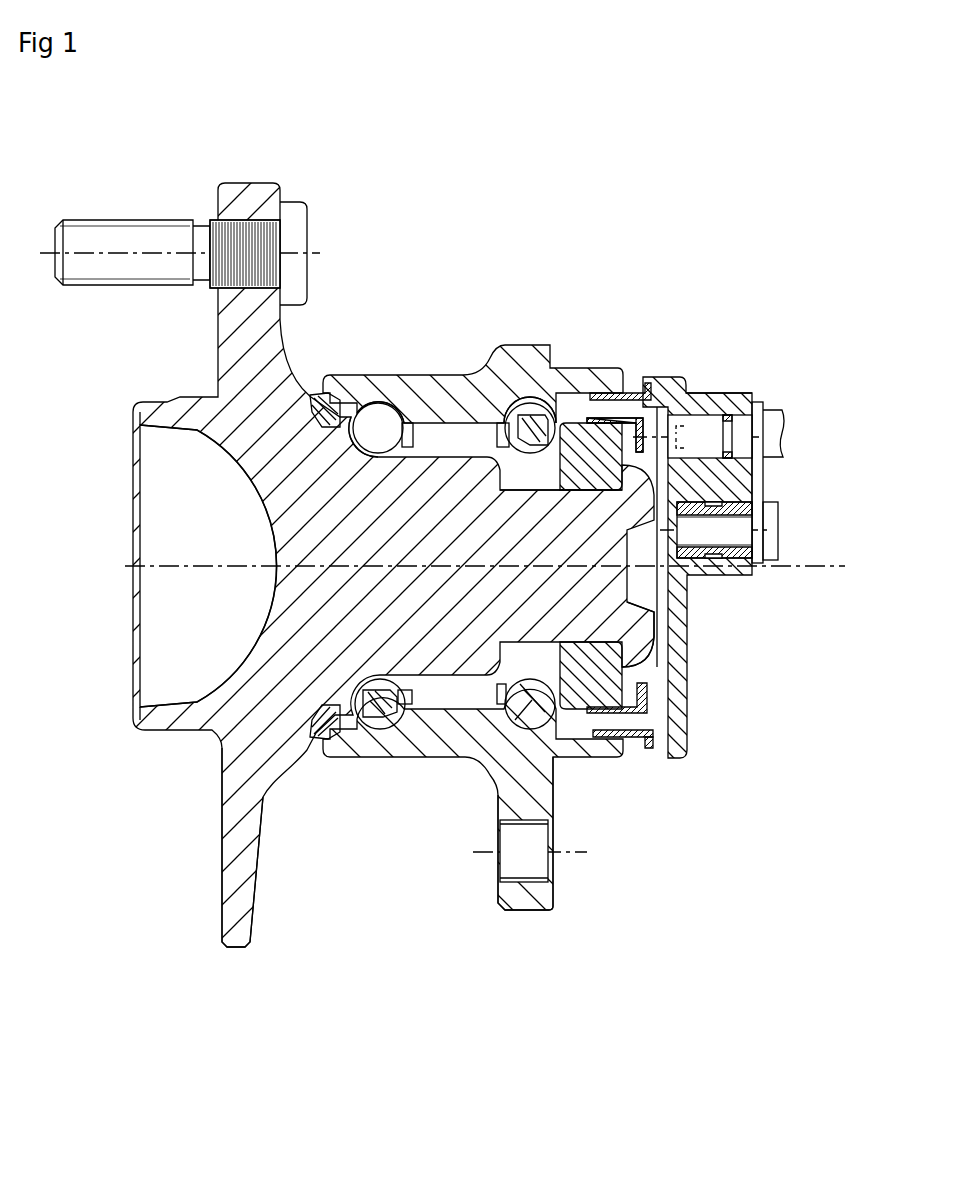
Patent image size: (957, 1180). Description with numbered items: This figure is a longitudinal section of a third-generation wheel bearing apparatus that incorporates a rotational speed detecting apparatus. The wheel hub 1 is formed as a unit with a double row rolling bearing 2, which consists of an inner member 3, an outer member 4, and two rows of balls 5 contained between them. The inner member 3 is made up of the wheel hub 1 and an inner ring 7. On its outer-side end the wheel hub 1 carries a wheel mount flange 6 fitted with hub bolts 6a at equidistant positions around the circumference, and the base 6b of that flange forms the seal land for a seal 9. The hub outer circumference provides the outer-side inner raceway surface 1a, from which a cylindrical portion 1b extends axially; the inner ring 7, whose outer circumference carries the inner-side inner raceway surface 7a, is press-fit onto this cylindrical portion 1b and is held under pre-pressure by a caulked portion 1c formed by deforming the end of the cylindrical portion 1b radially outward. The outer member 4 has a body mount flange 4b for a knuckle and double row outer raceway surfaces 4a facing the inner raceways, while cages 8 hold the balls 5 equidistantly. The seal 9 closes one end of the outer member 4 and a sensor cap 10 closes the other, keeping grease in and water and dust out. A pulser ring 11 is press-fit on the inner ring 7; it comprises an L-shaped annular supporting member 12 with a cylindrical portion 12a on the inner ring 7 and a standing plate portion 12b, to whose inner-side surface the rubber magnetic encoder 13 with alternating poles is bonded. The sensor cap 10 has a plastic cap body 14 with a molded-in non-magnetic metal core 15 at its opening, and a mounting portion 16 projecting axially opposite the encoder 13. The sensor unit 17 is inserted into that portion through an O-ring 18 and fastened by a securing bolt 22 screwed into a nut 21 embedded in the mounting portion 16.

The wheel hub 1 is at (290, 435).
The inner raceway surface 1a is at (380, 440).
The cylindrical portion 1b is at (574, 476).
The caulked portion 1c is at (648, 642).
The double row rolling bearing 2 is at (492, 316).
The inner member 3 is at (258, 516).
The outer member 4 is at (466, 392).
The outer raceway surface 4a is at (378, 440).
The body mount flange 4b is at (523, 900).
The rolling elements 5 is at (522, 718).
The wheel mount flange 6 is at (256, 195).
The hub bolt 6a is at (105, 243).
The base of the wheel mounting flange 6b is at (300, 383).
The inner ring 7 is at (562, 652).
The inner raceway surface 7a is at (526, 440).
The cage 8 is at (398, 690).
The seal 9 is at (222, 762).
The sensor cap 10 is at (634, 314).
The pulser ring 11 is at (786, 780).
The annular supporting member 12 is at (687, 761).
The cylindrical portion 12a is at (648, 748).
The standing plate portion 12b is at (655, 735).
The magnetic encoder 13 is at (645, 698).
The cap body 14 is at (701, 395).
The metal core 15 is at (630, 388).
The mounting portion 16 is at (738, 396).
The sensor unit 17 is at (786, 408).
The O-ring 18 is at (735, 420).
The nut 21 is at (752, 562).
The securing bolt 22 is at (772, 532).